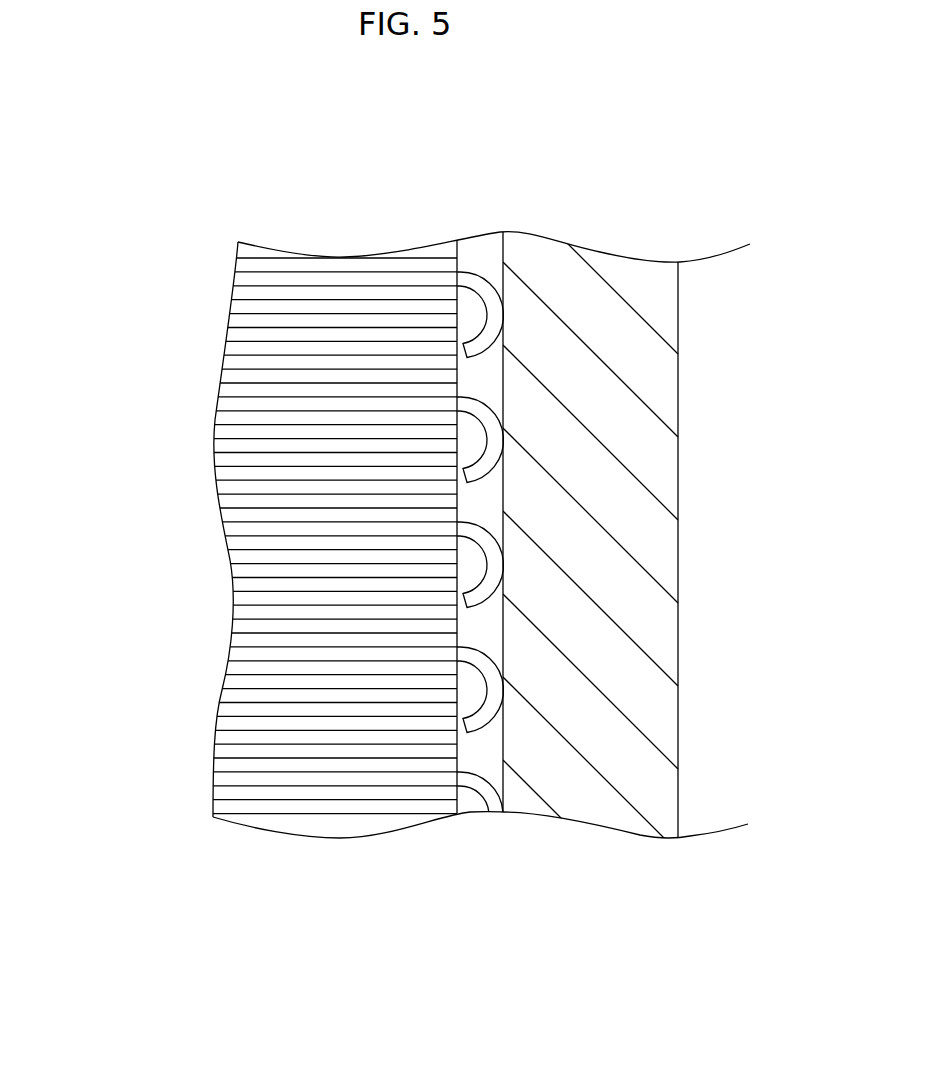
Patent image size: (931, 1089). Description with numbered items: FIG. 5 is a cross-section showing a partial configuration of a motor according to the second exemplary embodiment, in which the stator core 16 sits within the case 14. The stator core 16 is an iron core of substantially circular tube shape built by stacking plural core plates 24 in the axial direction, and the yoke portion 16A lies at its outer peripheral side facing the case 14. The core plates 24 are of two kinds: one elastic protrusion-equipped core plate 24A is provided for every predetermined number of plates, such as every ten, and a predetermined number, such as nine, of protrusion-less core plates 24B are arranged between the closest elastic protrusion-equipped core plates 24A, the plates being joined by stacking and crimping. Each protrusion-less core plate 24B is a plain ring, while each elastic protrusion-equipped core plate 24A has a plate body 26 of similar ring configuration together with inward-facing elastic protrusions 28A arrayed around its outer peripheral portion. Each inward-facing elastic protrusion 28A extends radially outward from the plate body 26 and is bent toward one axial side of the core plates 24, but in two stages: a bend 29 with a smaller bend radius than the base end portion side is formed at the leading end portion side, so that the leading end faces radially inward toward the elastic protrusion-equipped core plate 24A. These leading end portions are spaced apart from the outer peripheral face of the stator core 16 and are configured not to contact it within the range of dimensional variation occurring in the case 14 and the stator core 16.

The case 14 is at (680, 563).
The stator core 16 is at (480, 873).
The yoke portion 16A is at (392, 820).
The core plates 24 is at (268, 524).
The elastic protrusion-equipped core plate 24A is at (237, 273).
The protrusion-less core plate 24B is at (233, 347).
The plate body 26 is at (375, 525).
The inward-facing elastic protrusion 28A is at (481, 272).
The bend 29 is at (503, 327).